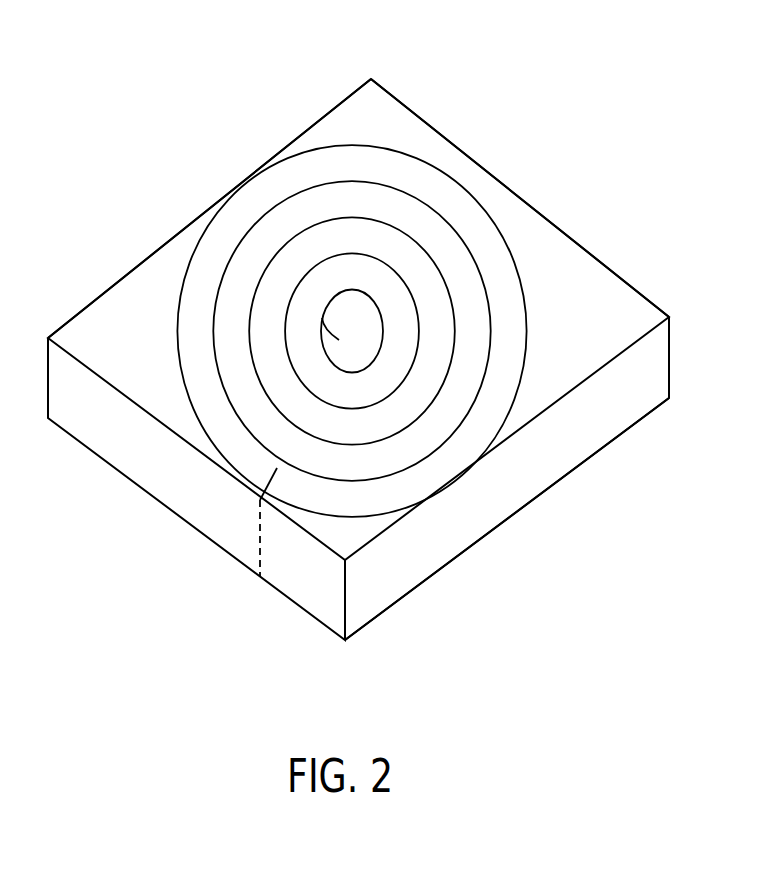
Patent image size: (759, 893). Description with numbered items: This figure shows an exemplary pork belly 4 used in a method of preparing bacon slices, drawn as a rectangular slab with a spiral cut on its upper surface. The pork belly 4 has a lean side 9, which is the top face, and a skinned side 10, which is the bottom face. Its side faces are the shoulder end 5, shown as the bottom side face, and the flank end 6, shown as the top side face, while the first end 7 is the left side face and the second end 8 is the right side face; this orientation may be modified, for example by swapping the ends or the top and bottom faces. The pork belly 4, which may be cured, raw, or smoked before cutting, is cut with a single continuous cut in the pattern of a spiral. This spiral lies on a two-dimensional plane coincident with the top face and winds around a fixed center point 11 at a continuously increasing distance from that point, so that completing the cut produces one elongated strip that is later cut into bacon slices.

The pork belly 4 is at (676, 99).
The shoulder end 5 is at (138, 470).
The flank end 6 is at (522, 197).
The first end 7 is at (178, 233).
The second end 8 is at (528, 470).
The lean side 9 is at (376, 117).
The skinned side 10 is at (388, 610).
The fixed center point 11 is at (339, 340).